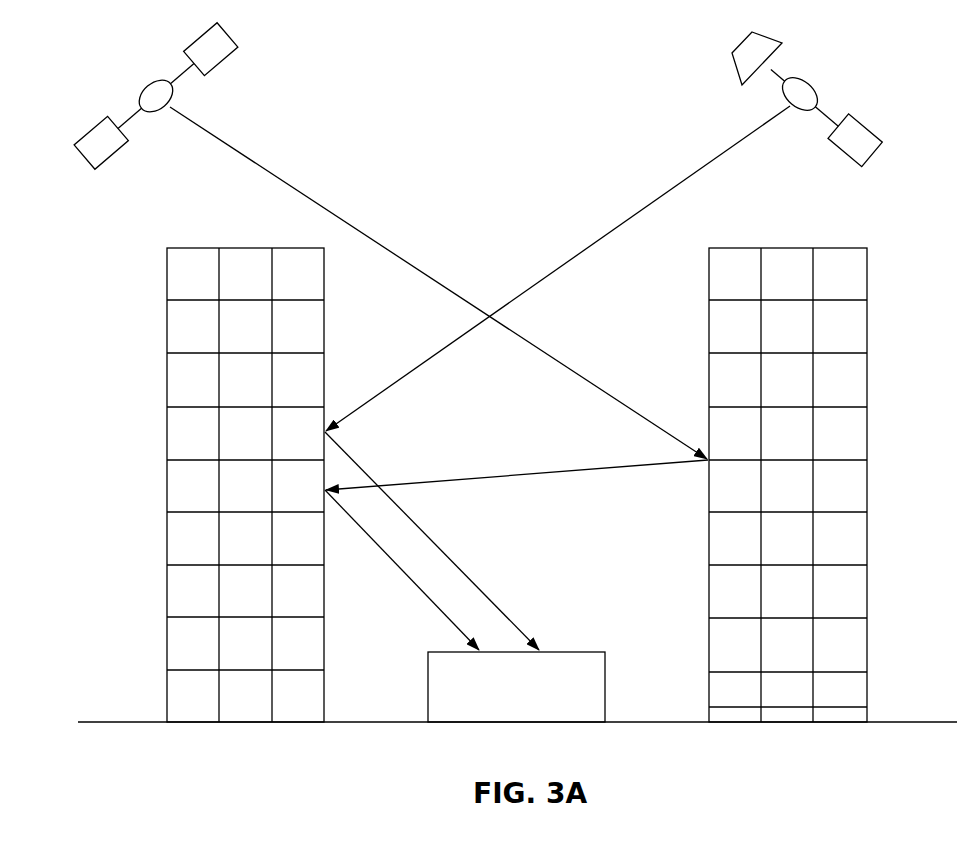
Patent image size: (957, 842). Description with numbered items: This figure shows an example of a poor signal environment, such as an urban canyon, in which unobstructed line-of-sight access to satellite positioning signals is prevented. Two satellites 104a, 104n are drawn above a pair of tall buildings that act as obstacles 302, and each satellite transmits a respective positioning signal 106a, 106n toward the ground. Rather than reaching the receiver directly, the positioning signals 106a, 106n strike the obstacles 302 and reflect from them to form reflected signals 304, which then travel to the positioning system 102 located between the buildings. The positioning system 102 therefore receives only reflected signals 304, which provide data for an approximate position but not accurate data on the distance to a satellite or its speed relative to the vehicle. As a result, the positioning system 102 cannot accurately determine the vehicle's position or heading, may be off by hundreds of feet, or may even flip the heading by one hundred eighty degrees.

The satellite 104a is at (148, 82).
The satellite 104n is at (823, 92).
The positioning signal 106a is at (296, 188).
The positioning signal 106n is at (673, 189).
The obstacle 302 is at (167, 380).
The reflected signal 304 is at (523, 477).
The positioning system 102 is at (605, 674).